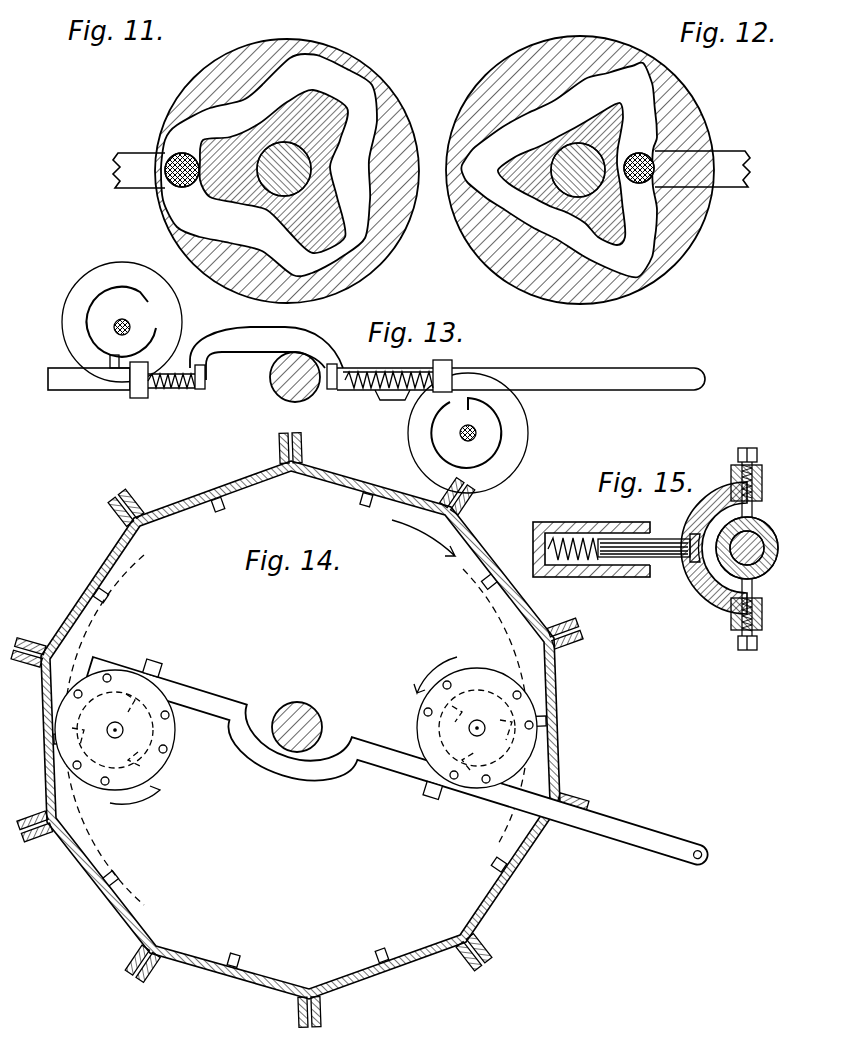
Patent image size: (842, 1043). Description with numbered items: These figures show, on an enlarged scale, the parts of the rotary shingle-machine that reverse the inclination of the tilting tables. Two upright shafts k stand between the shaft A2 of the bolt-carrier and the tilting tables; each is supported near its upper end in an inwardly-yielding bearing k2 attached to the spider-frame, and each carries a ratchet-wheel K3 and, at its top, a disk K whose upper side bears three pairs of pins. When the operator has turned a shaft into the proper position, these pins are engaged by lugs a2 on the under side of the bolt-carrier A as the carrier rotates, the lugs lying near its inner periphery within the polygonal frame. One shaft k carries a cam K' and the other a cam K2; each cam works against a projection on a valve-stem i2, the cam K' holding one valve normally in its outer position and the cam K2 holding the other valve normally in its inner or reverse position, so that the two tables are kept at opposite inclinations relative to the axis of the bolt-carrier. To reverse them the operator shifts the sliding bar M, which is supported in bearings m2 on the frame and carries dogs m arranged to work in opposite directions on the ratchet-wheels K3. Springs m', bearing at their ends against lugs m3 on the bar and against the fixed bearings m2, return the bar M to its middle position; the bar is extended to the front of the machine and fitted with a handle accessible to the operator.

In FIG. 11, the cam K' is at (271, 171).
In FIG. 12, the cam K2 is at (497, 70).
In FIG. 11, the valve-stem i2 is at (133, 178).
In FIG. 12, the valve-stem i2 is at (737, 180).
In FIG. 13, the disk K is at (292, 377).
In FIG. 14, the disk K is at (296, 662).
In FIG. 13, the upright shaft k is at (120, 319).
In FIG. 14, the upright shaft k is at (112, 736).
In FIG. 15, the upright shaft k is at (780, 549).
In FIG. 13, the ratchet-wheel K3 is at (156, 320).
In FIG. 13, the dog m is at (255, 378).
In FIG. 13, the bearing m2 is at (136, 398).
In FIG. 14, the bearing m2 is at (160, 676).
In FIG. 13, the spring m' is at (290, 391).
In FIG. 13, the lug m3 is at (214, 368).
In FIG. 13, the shaft of the bolt-carrier A2 is at (276, 388).
In FIG. 14, the shaft of the bolt-carrier A2 is at (297, 715).
In FIG. 13, the sliding bar M is at (585, 362).
In FIG. 14, the sliding bar M is at (393, 779).
In FIG. 14, the bolt-carrier A is at (300, 730).
In FIG. 14, the lug a2 is at (106, 592).
In FIG. 15, the inwardly-yielding bearing k2 is at (766, 535).